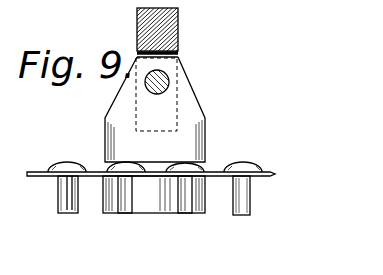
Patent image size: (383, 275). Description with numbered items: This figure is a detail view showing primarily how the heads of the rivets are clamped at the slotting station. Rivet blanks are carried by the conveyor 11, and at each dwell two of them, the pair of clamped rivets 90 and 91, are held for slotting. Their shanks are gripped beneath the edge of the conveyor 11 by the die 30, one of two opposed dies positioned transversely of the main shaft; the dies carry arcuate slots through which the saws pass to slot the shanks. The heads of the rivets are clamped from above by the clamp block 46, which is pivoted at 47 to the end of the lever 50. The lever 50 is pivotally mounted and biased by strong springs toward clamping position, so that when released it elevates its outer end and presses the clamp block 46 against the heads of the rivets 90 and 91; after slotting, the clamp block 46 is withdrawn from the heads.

The conveyor 11 is at (271, 172).
The die 30 is at (157, 214).
The clamp block 46 is at (196, 100).
The pivot 47 is at (166, 77).
The lever 50 is at (178, 23).
The rivet 90 is at (128, 214).
The rivet 91 is at (184, 214).